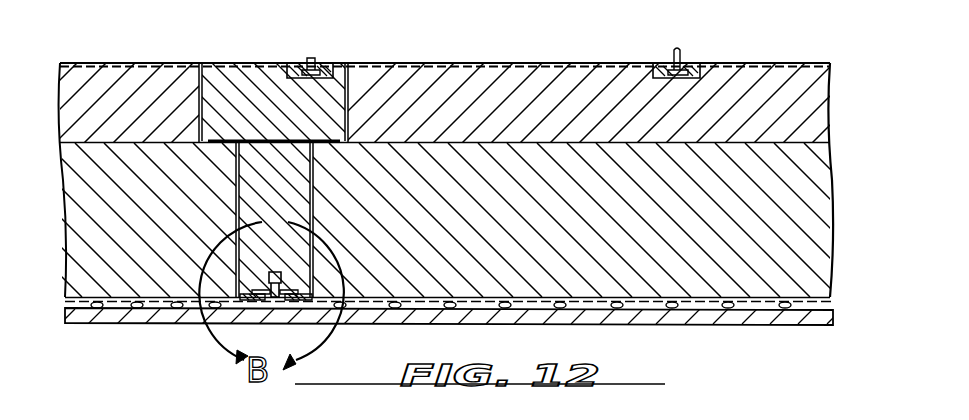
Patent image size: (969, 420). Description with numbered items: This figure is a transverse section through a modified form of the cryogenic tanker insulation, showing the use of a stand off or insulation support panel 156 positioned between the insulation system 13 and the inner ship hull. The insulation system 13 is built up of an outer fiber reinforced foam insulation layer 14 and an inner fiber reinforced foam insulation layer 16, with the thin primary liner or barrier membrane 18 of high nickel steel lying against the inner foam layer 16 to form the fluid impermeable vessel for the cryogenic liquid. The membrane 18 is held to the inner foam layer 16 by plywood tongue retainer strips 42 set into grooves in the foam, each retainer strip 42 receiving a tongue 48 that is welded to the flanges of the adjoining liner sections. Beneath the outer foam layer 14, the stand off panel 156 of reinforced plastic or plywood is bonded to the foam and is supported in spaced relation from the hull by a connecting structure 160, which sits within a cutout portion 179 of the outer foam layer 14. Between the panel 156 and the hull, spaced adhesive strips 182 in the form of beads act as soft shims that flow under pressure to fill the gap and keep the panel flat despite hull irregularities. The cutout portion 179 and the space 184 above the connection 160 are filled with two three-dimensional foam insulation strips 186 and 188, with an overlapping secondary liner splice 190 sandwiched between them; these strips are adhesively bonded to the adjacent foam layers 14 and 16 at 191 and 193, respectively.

The insulation system 13 is at (820, 326).
The outer fiber reinforced foam insulation layer 14 is at (823, 239).
The inner fiber reinforced foam insulation layer 16 is at (826, 113).
The primary liner or barrier membrane 18 is at (786, 56).
The plywood tongue retainer strip 42 is at (318, 62).
The tongue 48 is at (306, 58).
The stand off or insulation support panel 156 is at (748, 303).
The connecting structure 160 is at (287, 271).
The cutout portion 179 is at (306, 284).
The adhesive strips 182 is at (98, 310).
The space 184 is at (349, 66).
The 3D foam insulation strip 186 is at (290, 187).
The 3D foam insulation strip 188 is at (252, 84).
The secondary liner splice 190 is at (218, 146).
The adhesive bond 191 is at (232, 211).
The adhesive bond 193 is at (197, 95).